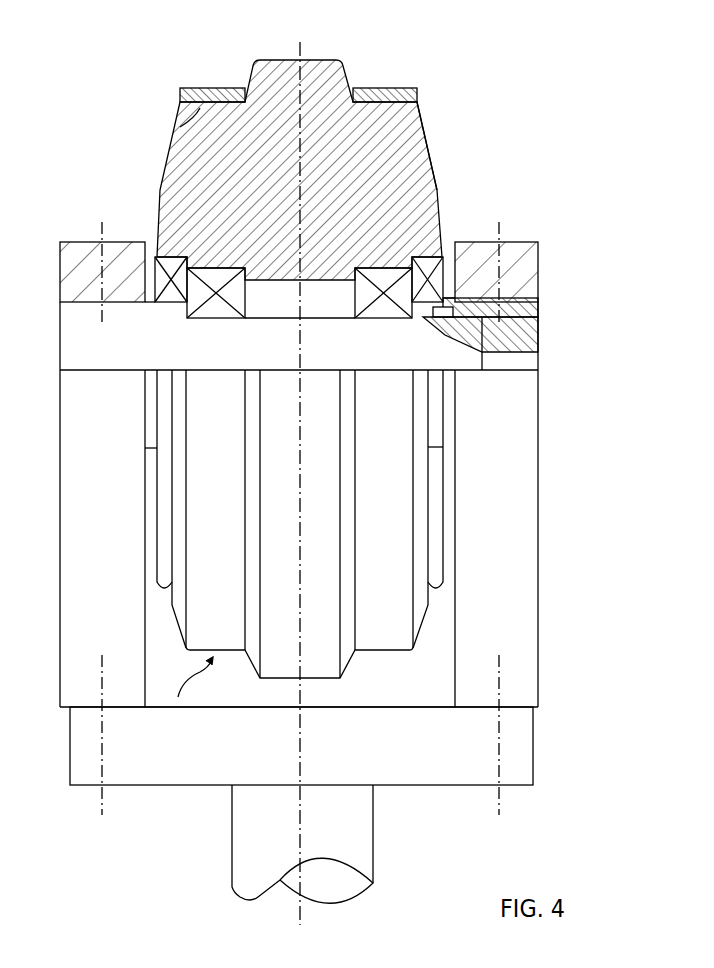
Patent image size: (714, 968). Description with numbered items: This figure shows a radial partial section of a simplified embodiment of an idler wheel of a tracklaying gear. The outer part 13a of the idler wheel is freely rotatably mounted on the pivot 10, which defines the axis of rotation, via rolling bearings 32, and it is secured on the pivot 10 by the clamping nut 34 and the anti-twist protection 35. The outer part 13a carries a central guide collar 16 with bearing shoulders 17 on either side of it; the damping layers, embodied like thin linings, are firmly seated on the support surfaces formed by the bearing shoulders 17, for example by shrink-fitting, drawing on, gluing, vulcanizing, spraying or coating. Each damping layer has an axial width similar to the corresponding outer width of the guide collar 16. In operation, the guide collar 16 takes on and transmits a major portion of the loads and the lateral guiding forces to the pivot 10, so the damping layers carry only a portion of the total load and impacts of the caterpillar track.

The pivot 10 is at (393, 368).
The guide collar 16 is at (318, 65).
The outer part 13a is at (430, 130).
The bearing shoulder 17 is at (178, 122).
The rolling bearing 32 is at (222, 306).
The clamping nut 34 is at (540, 300).
The anti-twist protection 35 is at (540, 325).